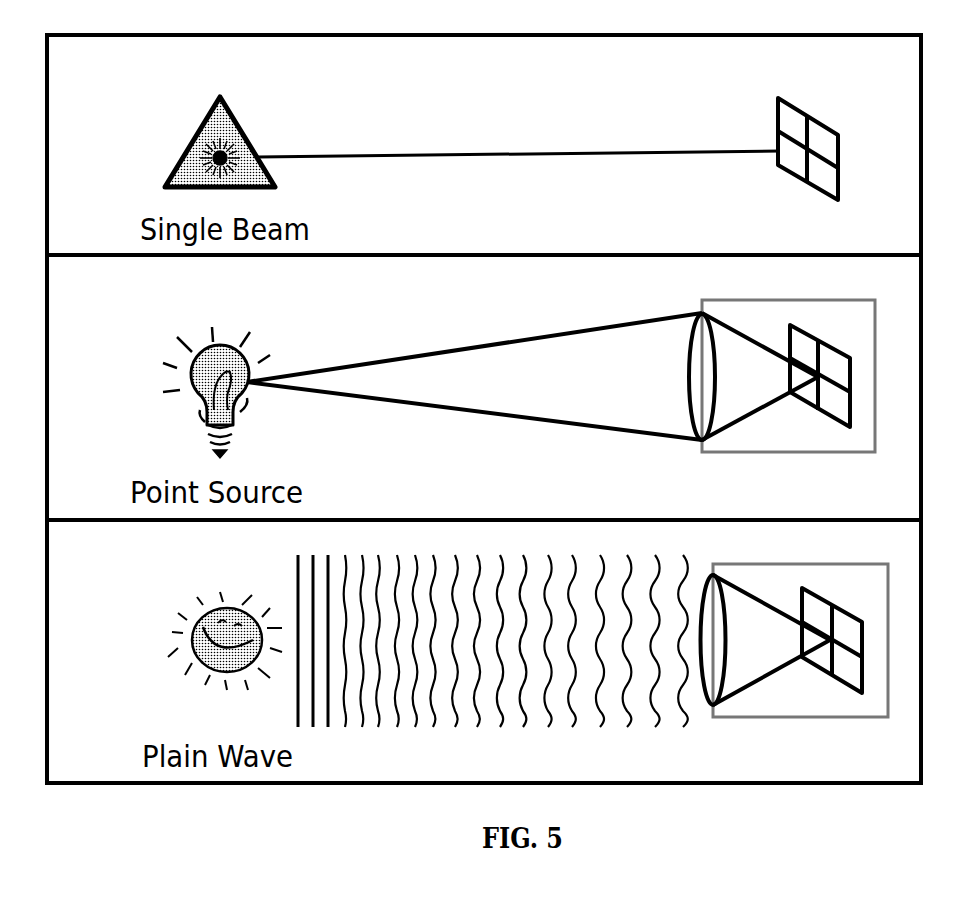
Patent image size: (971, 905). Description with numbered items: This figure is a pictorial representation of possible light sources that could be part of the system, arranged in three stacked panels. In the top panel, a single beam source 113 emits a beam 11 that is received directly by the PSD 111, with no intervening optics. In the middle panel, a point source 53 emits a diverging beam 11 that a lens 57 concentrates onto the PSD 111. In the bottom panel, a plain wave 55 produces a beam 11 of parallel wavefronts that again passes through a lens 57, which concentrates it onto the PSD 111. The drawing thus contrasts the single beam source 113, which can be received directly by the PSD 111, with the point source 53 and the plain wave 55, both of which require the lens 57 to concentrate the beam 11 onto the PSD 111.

The beam 11 is at (632, 152).
The point source 53 is at (240, 362).
The plain wave 55 is at (192, 630).
The lens 57 is at (697, 342).
The PSD 111 is at (807, 150).
The single beam source 113 is at (238, 137).